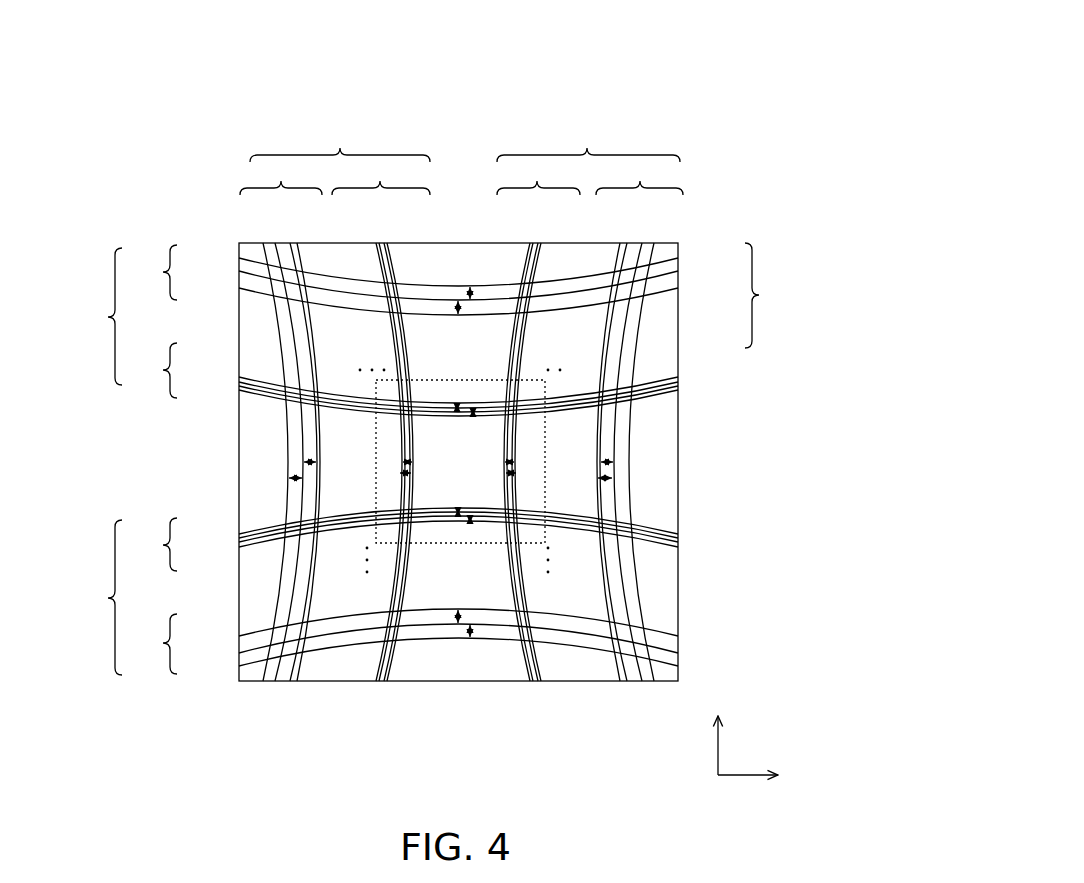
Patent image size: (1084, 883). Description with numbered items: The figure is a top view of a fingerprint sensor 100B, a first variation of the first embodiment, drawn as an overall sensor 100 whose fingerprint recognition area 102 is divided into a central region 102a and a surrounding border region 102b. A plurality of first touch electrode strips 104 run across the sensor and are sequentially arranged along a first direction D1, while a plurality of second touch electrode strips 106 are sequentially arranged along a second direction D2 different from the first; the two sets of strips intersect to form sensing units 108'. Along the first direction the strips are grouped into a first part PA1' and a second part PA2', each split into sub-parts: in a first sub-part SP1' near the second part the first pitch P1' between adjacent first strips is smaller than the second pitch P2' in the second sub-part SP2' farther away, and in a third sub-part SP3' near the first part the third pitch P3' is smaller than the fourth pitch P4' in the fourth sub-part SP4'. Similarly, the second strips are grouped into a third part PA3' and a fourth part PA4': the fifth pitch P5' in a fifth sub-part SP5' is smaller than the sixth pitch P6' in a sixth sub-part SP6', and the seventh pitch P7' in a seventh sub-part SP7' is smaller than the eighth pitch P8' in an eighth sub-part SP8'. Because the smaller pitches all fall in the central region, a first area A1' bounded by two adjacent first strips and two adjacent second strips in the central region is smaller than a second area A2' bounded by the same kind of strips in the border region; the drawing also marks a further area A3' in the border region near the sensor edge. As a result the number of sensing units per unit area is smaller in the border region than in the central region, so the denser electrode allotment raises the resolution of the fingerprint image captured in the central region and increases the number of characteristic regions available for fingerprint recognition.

The fingerprint sensor 100B is at (692, 80).
The touch panel 100 is at (666, 464).
The fingerprint recognition area 102 is at (772, 295).
The central region 102a is at (535, 387).
The border region 102b is at (572, 270).
The first touch electrode strips 104 is at (239, 258).
The second touch electrode strips 106 is at (263, 243).
The sensing units 108' is at (434, 325).
The first area A1' is at (632, 407).
The second area A2' is at (627, 308).
The third region A3' is at (683, 285).
The first pitch P1' is at (462, 425).
The second pitch P2' is at (473, 303).
The third pitch P3' is at (463, 538).
The fourth pitch P4' is at (473, 623).
The fifth pitch P5' is at (526, 480).
The sixth pitch P6' is at (614, 466).
The seventh pitch P7' is at (402, 480).
The eighth pitch P8' is at (304, 466).
The first part PA1' is at (91, 316).
The second part PA2' is at (91, 597).
The third part PA3' is at (588, 145).
The fourth part PA4' is at (340, 145).
The first sub-part SP1' is at (149, 370).
The second sub-part SP2' is at (149, 272).
The third sub-part SP3' is at (149, 544).
The fourth sub-part SP4' is at (149, 644).
The fifth sub-part SP5' is at (538, 179).
The sixth sub-part SP6' is at (639, 179).
The seventh sub-part SP7' is at (381, 179).
The eighth sub-part SP8' is at (281, 179).
The first direction D1 is at (718, 728).
The second direction D2 is at (765, 776).